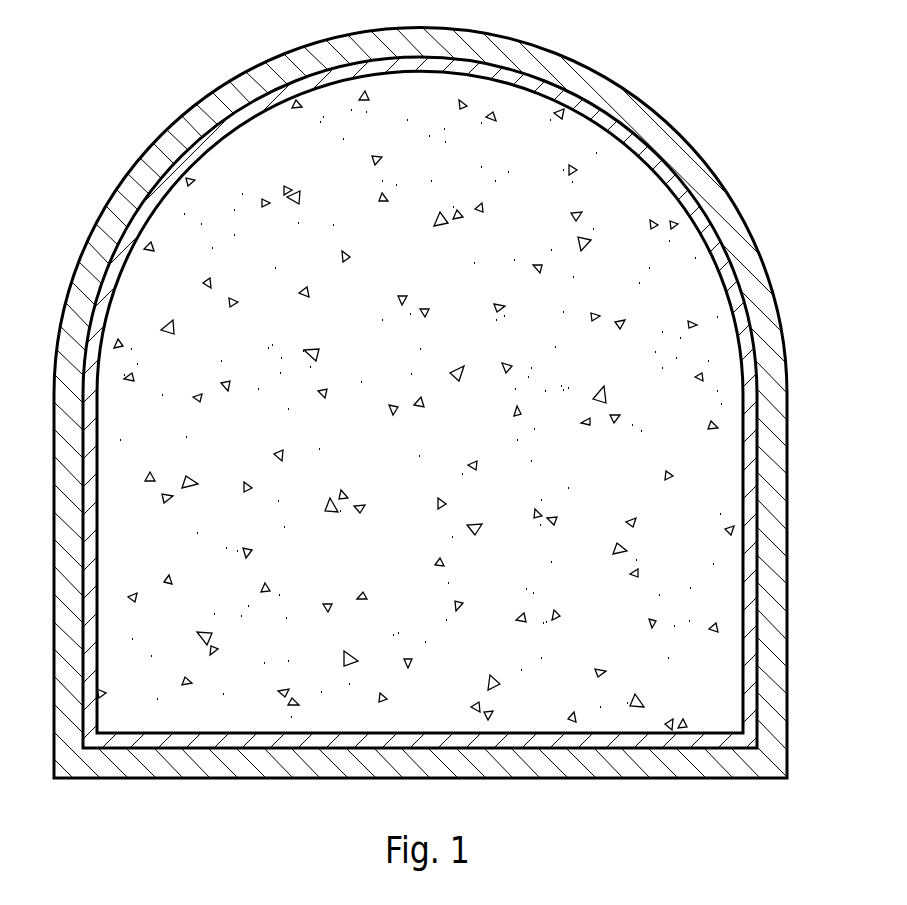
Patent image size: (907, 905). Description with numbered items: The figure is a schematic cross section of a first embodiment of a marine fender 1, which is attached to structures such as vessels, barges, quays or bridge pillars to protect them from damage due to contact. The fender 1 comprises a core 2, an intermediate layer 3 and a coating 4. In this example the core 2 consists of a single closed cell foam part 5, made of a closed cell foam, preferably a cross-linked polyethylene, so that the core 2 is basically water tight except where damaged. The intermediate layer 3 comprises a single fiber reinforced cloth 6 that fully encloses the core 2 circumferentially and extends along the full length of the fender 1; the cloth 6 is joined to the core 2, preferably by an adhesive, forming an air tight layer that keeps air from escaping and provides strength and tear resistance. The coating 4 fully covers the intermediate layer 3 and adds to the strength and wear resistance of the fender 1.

The fender 1 is at (471, 403).
The core 2 is at (700, 486).
The intermediate layer 3 is at (750, 558).
The coating 4 is at (776, 592).
The closed cell foam part 5 is at (668, 345).
The fiber reinforced cloth 6 is at (757, 523).